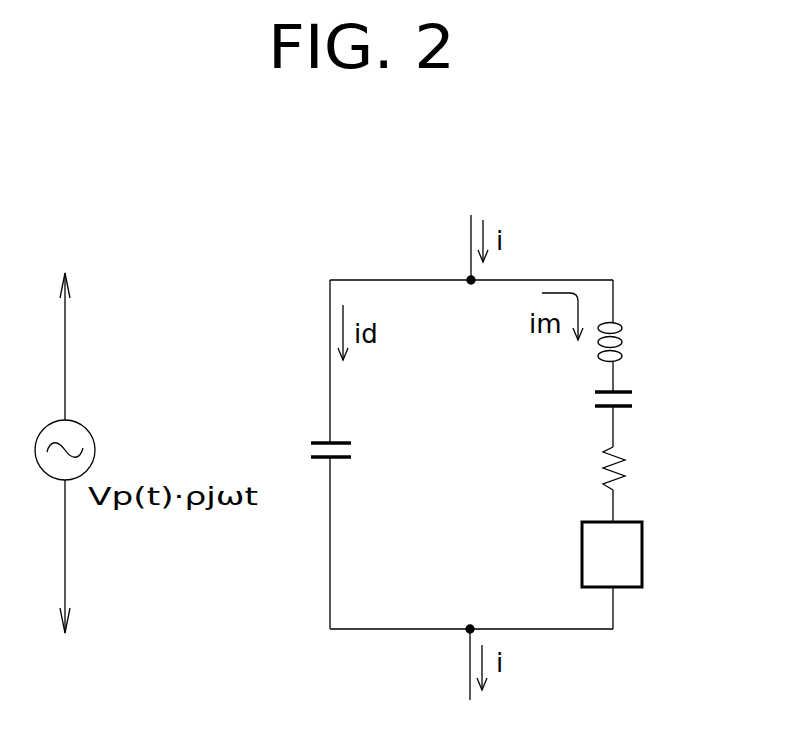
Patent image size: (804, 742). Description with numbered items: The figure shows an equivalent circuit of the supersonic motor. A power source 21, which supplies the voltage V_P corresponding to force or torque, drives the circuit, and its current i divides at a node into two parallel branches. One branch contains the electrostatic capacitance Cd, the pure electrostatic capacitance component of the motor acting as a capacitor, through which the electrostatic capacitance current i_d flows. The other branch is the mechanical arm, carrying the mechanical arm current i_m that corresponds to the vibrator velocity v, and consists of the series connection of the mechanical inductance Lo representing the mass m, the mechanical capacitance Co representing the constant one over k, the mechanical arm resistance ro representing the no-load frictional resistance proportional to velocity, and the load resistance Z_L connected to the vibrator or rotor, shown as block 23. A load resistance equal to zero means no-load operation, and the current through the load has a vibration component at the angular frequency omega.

The power source 21 is at (82, 422).
The tank circuit 23 is at (642, 548).
The electrostatic capacitance Cd is at (353, 453).
The mechanical inductance Lo is at (632, 343).
The mechanical capacitance Co is at (635, 401).
The mechanical arm resistance ro is at (635, 468).